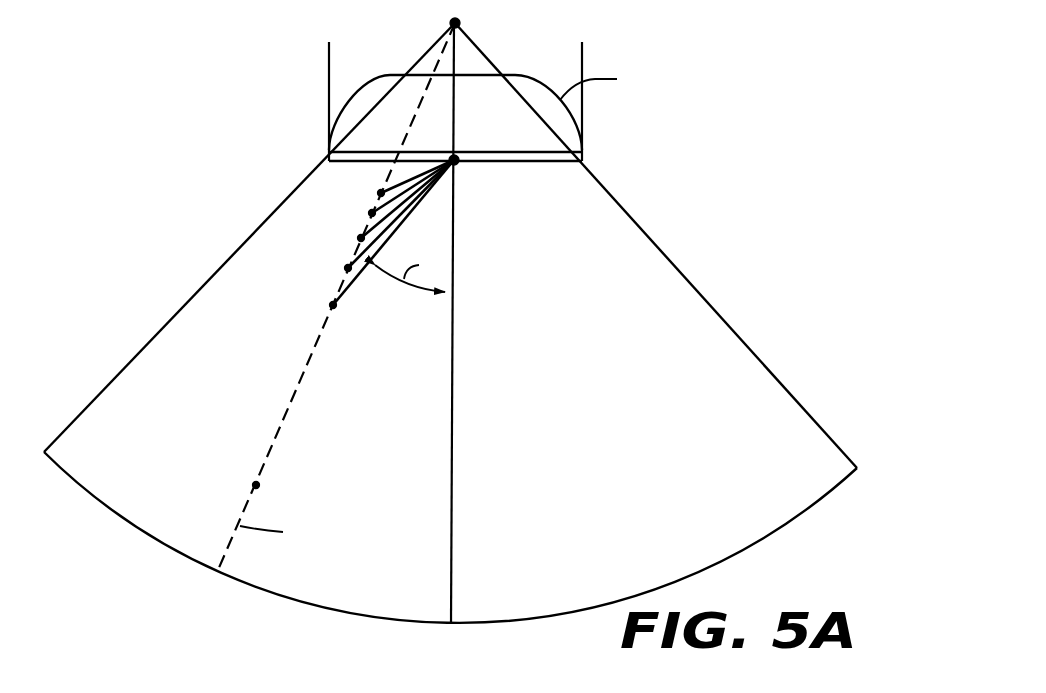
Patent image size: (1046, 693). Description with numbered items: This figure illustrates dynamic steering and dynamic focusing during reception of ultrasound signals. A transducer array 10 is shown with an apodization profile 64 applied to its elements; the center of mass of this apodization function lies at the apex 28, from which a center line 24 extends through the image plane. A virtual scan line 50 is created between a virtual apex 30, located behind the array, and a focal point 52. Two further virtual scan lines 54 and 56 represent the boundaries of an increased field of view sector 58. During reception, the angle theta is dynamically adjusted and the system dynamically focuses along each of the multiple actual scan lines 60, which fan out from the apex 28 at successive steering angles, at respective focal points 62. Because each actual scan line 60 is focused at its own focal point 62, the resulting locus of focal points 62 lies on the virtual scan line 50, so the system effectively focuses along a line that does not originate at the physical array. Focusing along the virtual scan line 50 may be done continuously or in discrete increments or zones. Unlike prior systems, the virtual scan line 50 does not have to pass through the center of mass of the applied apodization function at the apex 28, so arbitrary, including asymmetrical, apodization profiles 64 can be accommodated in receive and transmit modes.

The transducer array 10 is at (590, 162).
The center line 24 is at (453, 458).
The apex 28 is at (460, 163).
The virtual apex 30 is at (460, 22).
The virtual scan line 50 is at (237, 510).
The focal point 52 is at (259, 485).
The virtual scan line 54 is at (202, 286).
The virtual scan line 56 is at (670, 260).
The increased field of view sector 58 is at (655, 450).
The actual scan lines 60 is at (430, 186).
The focal points 62 is at (378, 193).
The apodization profile 64 is at (512, 74).